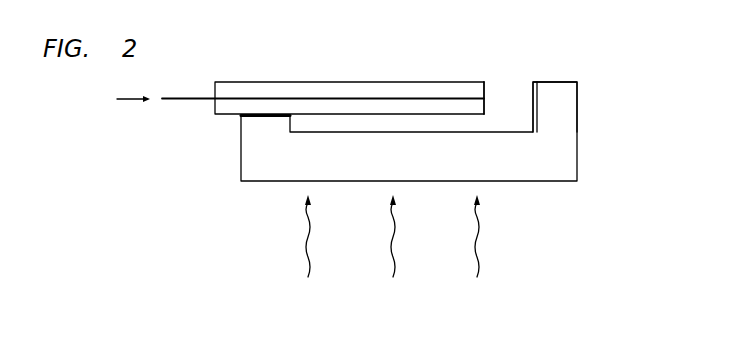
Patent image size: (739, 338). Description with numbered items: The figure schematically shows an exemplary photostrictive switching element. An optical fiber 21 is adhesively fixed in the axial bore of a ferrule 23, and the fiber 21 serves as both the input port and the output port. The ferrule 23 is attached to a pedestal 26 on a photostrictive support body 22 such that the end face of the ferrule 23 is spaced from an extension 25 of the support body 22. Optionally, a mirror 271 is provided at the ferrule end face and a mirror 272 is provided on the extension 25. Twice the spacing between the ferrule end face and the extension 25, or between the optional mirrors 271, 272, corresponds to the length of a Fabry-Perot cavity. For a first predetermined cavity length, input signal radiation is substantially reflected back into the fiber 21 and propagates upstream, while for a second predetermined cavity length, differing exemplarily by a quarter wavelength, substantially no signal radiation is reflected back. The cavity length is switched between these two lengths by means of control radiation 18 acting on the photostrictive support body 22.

The control radiation 18 is at (308, 268).
The optical fiber 21 is at (192, 99).
The photostrictive support body 22 is at (577, 172).
The ferrule 23 is at (343, 82).
The extension 25 is at (577, 103).
The pedestal 26 is at (246, 116).
The mirror 271 is at (486, 82).
The mirror 272 is at (533, 122).